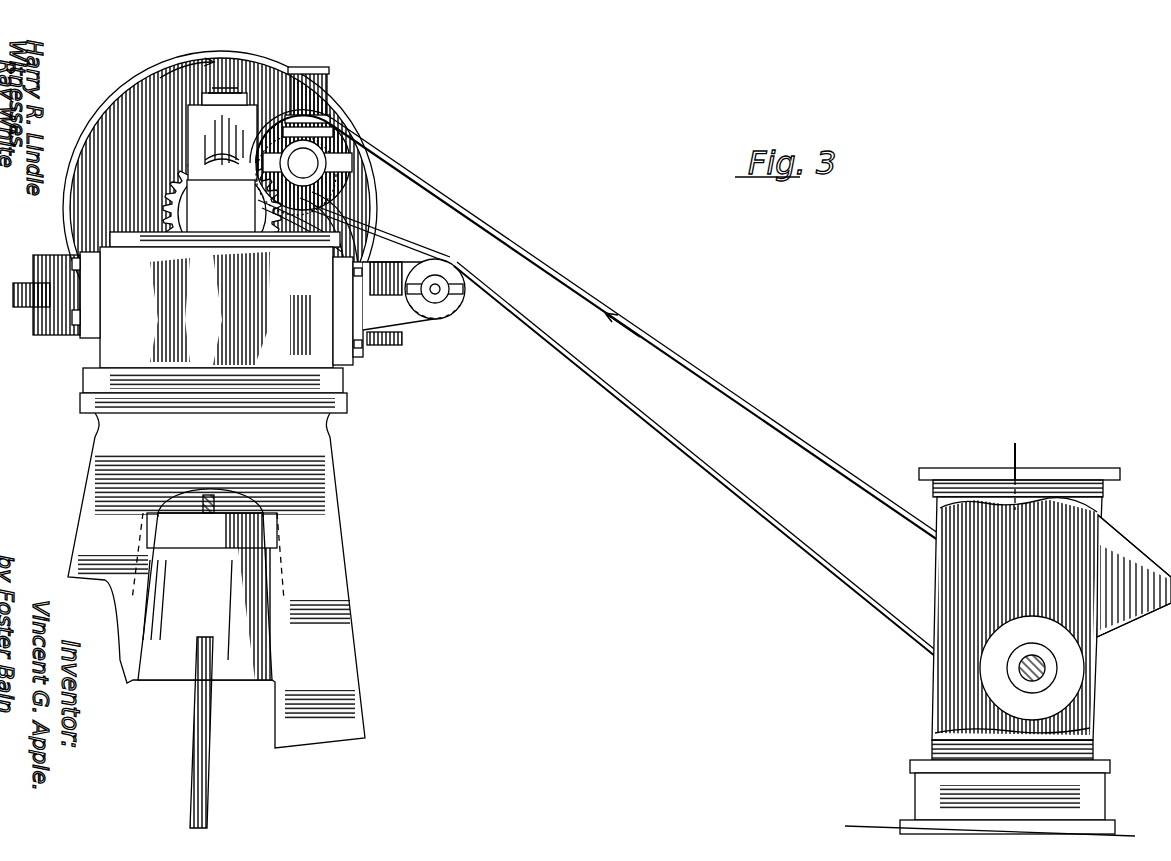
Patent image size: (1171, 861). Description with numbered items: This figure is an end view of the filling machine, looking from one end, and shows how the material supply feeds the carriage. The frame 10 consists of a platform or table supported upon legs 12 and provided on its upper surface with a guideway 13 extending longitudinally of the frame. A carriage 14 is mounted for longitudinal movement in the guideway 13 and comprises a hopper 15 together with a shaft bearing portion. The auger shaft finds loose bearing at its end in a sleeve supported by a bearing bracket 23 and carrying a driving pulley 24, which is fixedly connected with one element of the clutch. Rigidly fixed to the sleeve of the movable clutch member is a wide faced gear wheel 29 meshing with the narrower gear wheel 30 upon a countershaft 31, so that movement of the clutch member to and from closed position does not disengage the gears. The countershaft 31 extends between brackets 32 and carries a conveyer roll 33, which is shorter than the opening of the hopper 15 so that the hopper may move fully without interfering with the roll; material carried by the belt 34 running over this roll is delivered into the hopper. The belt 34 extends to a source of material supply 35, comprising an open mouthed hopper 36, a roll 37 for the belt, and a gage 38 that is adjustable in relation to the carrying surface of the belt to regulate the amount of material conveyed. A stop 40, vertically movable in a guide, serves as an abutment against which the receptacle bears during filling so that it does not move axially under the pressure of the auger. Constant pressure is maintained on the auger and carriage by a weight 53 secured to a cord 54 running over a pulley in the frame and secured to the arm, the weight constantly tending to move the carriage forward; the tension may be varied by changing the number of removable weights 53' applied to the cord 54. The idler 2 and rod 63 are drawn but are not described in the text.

The idler pulley 2 is at (402, 340).
The frame 10 is at (347, 395).
The legs 12 is at (320, 511).
The guideway 13 is at (140, 246).
The carriage 14 is at (265, 235).
The hopper 15 is at (195, 125).
The bearing bracket 23 is at (50, 330).
The driving pulley 24 is at (62, 228).
The wide faced gear wheel 29 is at (170, 210).
The gear wheel 30 is at (358, 124).
The countershaft 31 is at (308, 164).
The brackets 32 is at (352, 213).
The conveyer roll 33 is at (366, 146).
The belt 34 is at (512, 236).
The source of material supply 35 is at (1050, 480).
The open mouthed hopper 36 is at (1127, 575).
The roll 37 is at (1017, 630).
The gage 38 is at (1020, 455).
The stop 40 is at (221, 214).
The weight 53 is at (208, 584).
The removable weights 53' is at (212, 530).
The cord 54 is at (218, 507).
The rod 63 is at (208, 778).